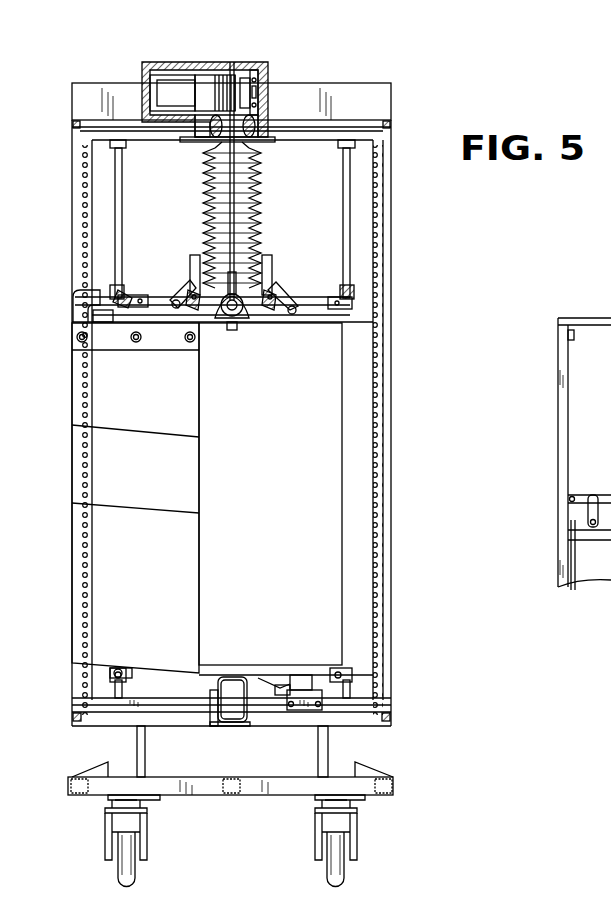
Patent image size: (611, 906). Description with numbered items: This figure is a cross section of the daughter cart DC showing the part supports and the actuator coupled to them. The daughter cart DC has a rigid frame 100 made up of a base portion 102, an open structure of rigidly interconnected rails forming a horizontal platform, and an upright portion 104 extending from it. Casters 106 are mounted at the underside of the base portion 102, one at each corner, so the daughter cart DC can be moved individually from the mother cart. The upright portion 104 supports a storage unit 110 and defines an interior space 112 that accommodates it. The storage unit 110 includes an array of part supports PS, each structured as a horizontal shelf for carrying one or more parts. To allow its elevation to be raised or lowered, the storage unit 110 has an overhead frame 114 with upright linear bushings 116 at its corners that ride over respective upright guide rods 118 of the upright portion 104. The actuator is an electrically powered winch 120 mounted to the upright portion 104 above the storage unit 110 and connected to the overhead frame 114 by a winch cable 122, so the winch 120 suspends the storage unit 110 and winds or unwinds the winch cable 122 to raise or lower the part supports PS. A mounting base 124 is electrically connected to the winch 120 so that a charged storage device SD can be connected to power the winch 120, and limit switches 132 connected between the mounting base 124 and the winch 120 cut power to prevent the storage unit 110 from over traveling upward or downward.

The rigid frame 100 is at (457, 658).
The base portion 102 is at (407, 777).
The upright portion 104 is at (393, 655).
The casters 106 is at (137, 875).
The storage unit 110 is at (200, 448).
The interior space 112 is at (318, 420).
The overhead frame 114 is at (303, 295).
The upright linear bushings 116 is at (352, 290).
The upright guide rods 118 is at (350, 263).
The winch 120 is at (205, 90).
The winch cable 122 is at (262, 215).
The mounting base 124 is at (230, 726).
The limit switches 132 is at (300, 678).
The daughter cart DC is at (347, 83).
The part supports PS is at (138, 510).
The storage device SD is at (233, 690).